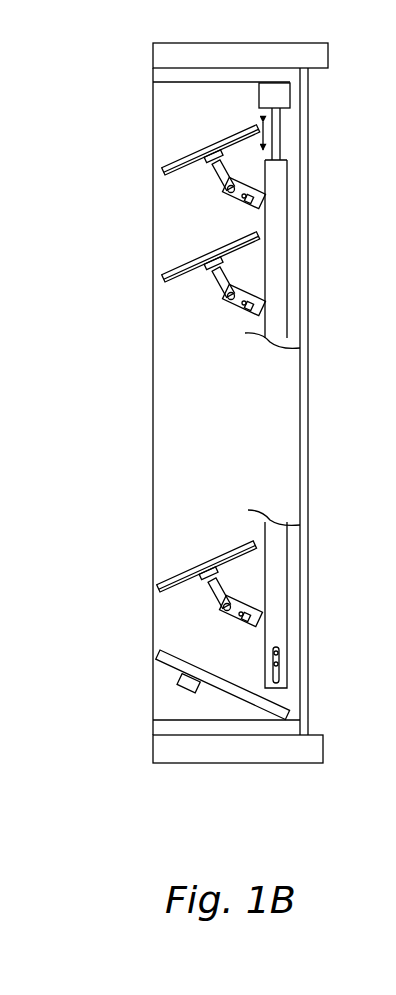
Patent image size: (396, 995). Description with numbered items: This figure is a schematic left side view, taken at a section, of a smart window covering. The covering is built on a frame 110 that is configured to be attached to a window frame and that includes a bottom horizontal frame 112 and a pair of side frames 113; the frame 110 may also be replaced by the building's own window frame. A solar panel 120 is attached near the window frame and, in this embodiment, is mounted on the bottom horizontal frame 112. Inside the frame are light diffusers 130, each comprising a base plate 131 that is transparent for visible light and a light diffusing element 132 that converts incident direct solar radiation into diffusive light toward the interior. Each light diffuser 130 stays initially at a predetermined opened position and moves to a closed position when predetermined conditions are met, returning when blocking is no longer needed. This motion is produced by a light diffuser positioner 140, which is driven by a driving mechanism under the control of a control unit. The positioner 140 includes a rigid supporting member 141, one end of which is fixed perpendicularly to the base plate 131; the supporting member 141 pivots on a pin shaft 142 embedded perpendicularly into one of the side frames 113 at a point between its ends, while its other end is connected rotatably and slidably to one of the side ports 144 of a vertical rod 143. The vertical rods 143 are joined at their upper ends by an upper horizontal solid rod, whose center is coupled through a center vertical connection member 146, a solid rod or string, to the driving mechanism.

The frame 110 is at (160, 52).
The bottom horizontal frame 112 is at (158, 731).
The side frames 113 is at (182, 461).
The solar panel 120 is at (167, 637).
The light diffuser 130 is at (151, 277).
The base plate 131 is at (188, 274).
The light diffusing element 132 is at (172, 264).
The light diffuser positioner 140 is at (291, 218).
The supporting member 141 is at (214, 183).
The pin shafts 142 is at (228, 308).
The vertical rods 143 is at (283, 321).
The side ports 144 is at (248, 318).
The center vertical connection member 146 is at (284, 137).